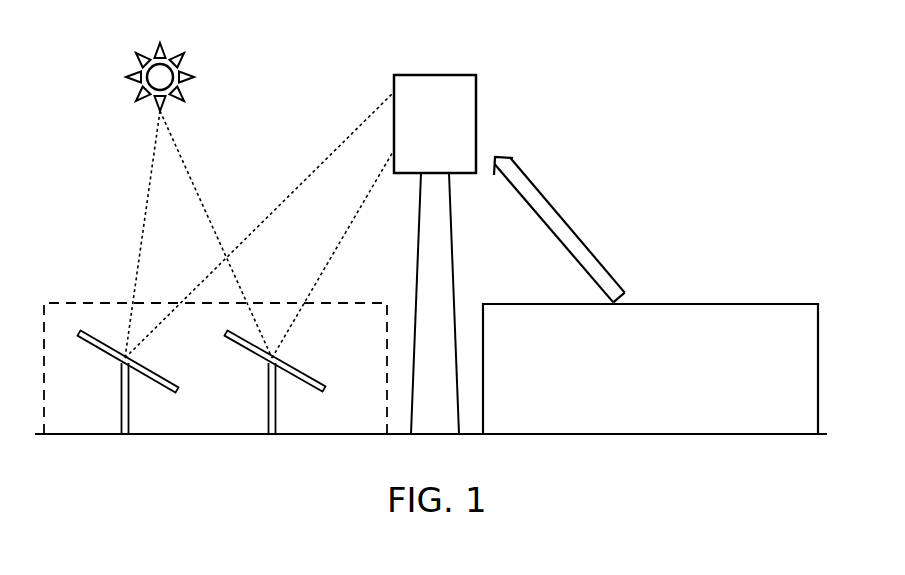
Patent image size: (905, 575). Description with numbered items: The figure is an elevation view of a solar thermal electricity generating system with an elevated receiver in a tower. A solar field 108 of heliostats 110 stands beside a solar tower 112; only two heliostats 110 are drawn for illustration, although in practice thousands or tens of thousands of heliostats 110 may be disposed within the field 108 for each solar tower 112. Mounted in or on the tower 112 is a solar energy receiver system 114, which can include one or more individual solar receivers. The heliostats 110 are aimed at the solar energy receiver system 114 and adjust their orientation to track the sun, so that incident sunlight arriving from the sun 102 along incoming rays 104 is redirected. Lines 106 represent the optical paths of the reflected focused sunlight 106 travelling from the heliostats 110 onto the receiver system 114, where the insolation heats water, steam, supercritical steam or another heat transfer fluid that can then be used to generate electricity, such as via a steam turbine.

The sun 102 is at (191, 57).
The incident solar radiation 104 is at (175, 229).
The reflected focused sunlight 106 is at (403, 225).
The solar field 108 is at (428, 324).
The heliostat 110 is at (191, 410).
The solar tower 112 is at (501, 235).
The solar energy receiver system 114 is at (435, 124).